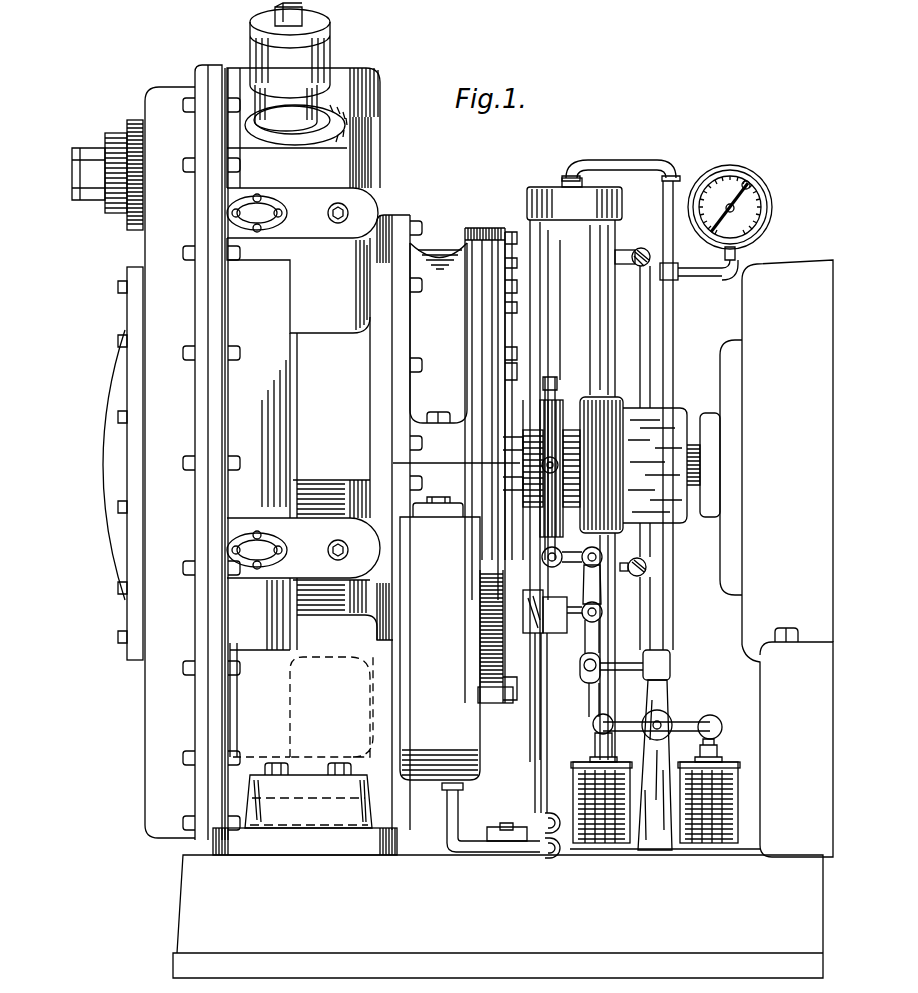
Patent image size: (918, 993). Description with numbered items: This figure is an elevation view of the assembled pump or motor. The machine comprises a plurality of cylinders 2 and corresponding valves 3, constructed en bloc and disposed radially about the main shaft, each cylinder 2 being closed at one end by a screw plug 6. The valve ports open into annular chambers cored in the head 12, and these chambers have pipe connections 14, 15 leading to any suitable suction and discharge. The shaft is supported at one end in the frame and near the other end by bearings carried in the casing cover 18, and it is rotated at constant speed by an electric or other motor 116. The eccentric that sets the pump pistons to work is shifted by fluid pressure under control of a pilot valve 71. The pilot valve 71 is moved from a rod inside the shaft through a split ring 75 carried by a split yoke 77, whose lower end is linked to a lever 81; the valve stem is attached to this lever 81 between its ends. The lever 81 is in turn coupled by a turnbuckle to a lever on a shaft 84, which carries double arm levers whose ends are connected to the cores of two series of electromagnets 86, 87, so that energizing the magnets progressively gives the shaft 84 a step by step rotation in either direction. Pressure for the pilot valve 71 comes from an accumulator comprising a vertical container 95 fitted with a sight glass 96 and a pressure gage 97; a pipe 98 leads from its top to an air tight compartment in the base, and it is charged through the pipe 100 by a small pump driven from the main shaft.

The cylinder 2 is at (335, 500).
The valve 3 is at (257, 381).
The screw plug 6 is at (350, 207).
The head 12 is at (163, 107).
The pipe connection 14 is at (99, 150).
The pipe connection 15 is at (82, 163).
The casing cover 18 is at (490, 230).
The pilot valve 71 is at (545, 637).
The split ring 75 is at (313, 55).
The split yoke 77 is at (552, 393).
The lever 81 is at (607, 594).
The shaft 84 is at (662, 724).
The electromagnet 86 is at (742, 818).
The electromagnet 87 is at (573, 835).
The vertical container 95 is at (622, 211).
The sight glass 96 is at (645, 348).
The pressure gage 97 is at (758, 180).
The pipe 98 is at (620, 158).
The pipe 100 is at (458, 805).
The motor 116 is at (776, 558).